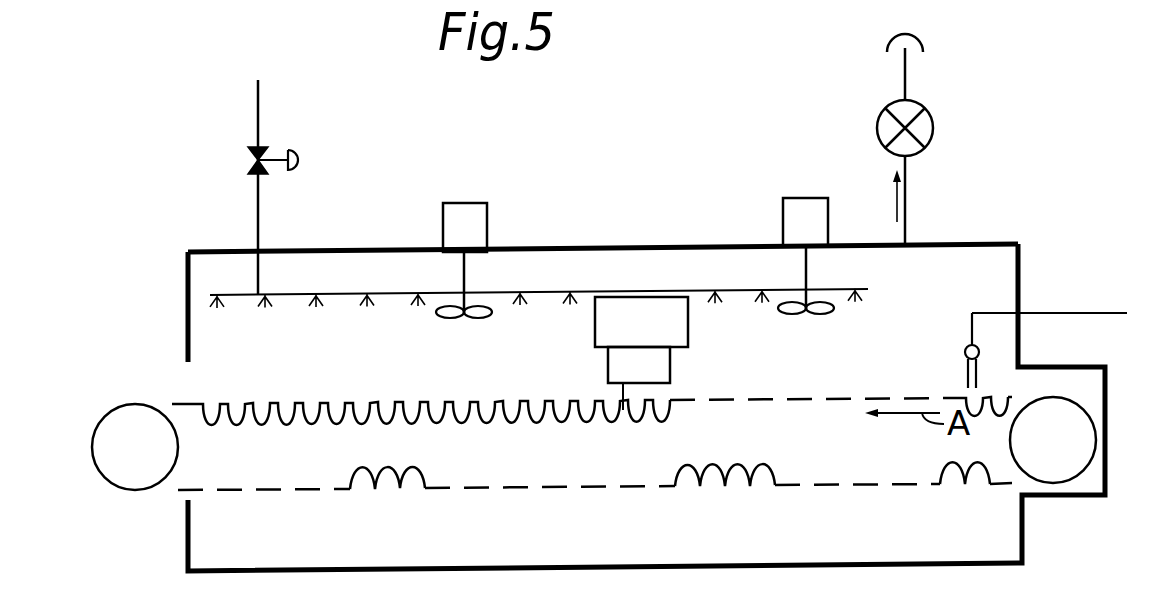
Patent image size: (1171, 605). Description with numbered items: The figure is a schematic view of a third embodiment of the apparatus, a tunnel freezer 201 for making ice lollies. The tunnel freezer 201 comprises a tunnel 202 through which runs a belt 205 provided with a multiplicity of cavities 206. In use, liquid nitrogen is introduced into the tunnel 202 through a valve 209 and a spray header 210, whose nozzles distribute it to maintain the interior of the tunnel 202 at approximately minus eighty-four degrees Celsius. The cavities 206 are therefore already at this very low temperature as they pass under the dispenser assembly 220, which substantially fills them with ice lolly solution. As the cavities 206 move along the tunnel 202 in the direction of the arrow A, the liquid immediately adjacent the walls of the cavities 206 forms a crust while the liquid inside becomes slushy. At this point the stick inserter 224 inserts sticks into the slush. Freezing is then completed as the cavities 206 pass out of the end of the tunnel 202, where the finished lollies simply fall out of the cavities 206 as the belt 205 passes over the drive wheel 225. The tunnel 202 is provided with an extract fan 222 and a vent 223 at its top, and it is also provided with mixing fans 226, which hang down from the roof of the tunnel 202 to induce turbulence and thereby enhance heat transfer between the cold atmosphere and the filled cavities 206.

The tunnel freezer 201 is at (163, 235).
The tunnel 202 is at (562, 264).
The belt 205 is at (168, 400).
The cavities 206 is at (411, 402).
The valve 209 is at (298, 160).
The spray header 210 is at (297, 293).
The dispenser assembly 220 is at (965, 352).
The extract fan 222 is at (933, 128).
The vent 223 is at (908, 72).
The stick inserter 224 is at (637, 318).
The drive wheel 225 is at (126, 470).
The mixing fans 226 is at (443, 226).